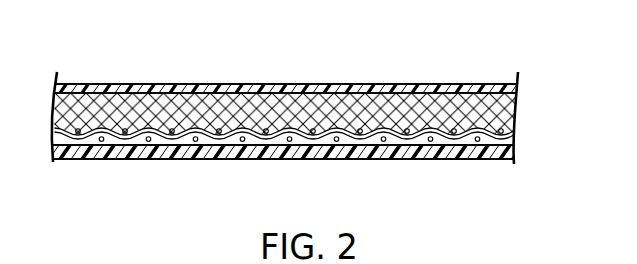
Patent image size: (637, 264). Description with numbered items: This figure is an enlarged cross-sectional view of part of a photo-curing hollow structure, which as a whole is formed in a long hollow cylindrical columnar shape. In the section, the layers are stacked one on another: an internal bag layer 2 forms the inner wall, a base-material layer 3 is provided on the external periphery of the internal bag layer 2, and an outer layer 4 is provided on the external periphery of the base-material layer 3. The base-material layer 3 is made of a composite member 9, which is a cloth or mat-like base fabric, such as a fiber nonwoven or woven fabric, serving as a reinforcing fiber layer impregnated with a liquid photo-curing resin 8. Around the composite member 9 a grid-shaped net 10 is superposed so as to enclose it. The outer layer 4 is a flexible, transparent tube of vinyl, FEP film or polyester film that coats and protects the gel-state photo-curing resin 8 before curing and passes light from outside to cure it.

The internal bag layer 2 is at (330, 84).
The base-material layer 3 is at (516, 100).
The outer layer 4 is at (455, 160).
The photo-curing resin 8 is at (455, 93).
The composite member 9 is at (176, 97).
The grid-shaped net 10 is at (275, 141).